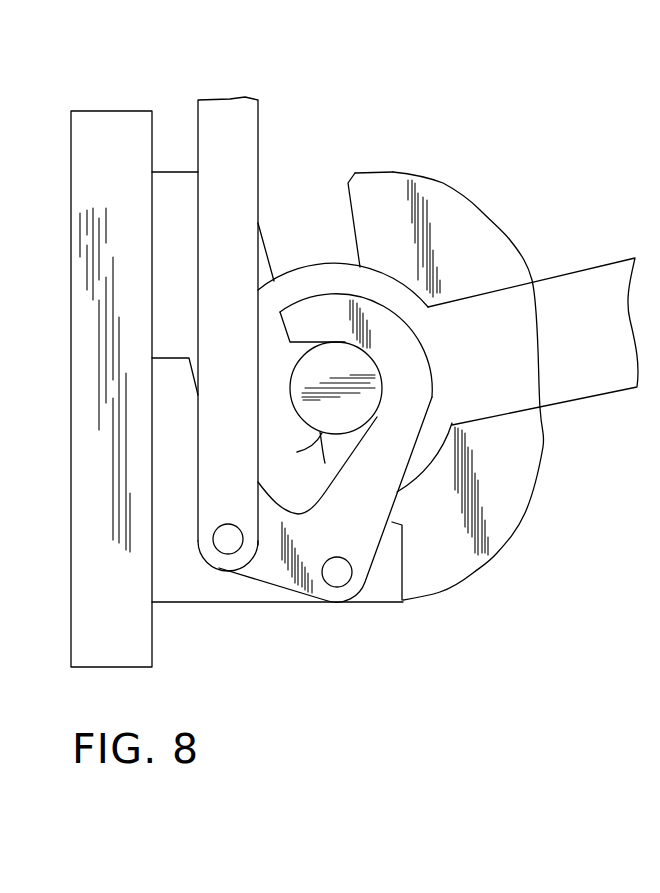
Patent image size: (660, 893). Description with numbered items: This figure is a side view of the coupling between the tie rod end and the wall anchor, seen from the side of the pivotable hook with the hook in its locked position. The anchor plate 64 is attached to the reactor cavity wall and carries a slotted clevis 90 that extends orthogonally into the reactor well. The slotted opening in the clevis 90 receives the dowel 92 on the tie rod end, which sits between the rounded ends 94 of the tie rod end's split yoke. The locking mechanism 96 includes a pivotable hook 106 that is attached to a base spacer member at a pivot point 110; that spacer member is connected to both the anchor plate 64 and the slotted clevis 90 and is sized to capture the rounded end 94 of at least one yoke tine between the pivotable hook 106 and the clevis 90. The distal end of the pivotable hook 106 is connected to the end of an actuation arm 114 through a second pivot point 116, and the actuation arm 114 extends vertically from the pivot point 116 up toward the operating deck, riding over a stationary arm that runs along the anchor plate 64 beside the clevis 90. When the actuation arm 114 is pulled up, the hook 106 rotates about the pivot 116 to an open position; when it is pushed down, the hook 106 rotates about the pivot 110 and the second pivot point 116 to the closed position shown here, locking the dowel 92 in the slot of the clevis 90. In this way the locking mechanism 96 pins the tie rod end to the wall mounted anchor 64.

The anchor plate 64 is at (112, 125).
The actuation arm 114 is at (253, 167).
The slotted clevis 90 is at (465, 228).
The rounded end 94 is at (343, 278).
The dowel 92 is at (370, 400).
The pivotable hook 106 is at (380, 488).
The second pivot point 116 is at (237, 543).
The pivot point 110 is at (340, 578).
The locking mechanism 96 is at (228, 567).